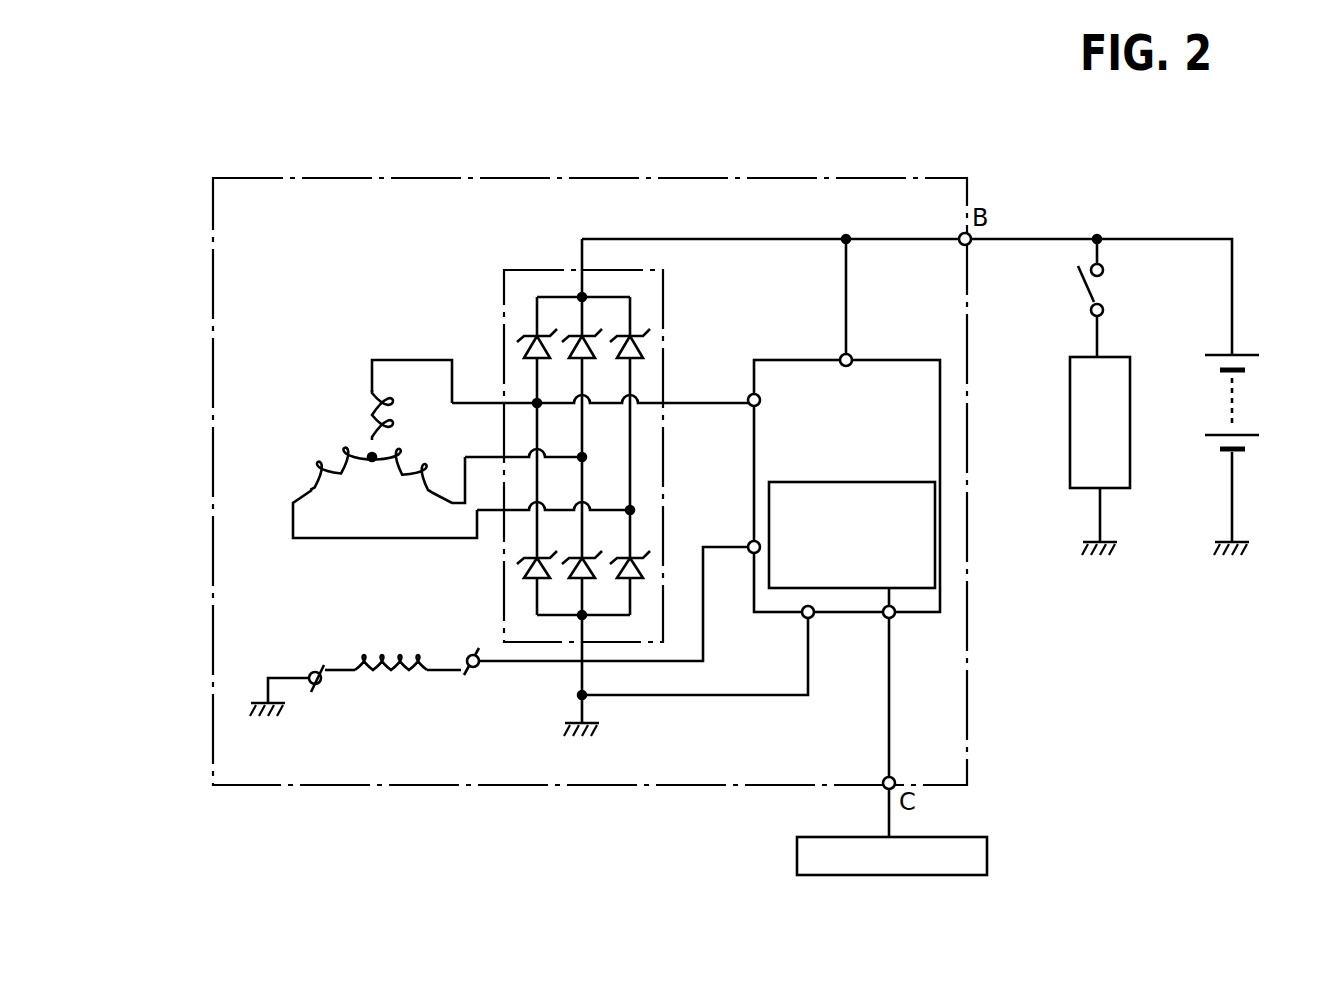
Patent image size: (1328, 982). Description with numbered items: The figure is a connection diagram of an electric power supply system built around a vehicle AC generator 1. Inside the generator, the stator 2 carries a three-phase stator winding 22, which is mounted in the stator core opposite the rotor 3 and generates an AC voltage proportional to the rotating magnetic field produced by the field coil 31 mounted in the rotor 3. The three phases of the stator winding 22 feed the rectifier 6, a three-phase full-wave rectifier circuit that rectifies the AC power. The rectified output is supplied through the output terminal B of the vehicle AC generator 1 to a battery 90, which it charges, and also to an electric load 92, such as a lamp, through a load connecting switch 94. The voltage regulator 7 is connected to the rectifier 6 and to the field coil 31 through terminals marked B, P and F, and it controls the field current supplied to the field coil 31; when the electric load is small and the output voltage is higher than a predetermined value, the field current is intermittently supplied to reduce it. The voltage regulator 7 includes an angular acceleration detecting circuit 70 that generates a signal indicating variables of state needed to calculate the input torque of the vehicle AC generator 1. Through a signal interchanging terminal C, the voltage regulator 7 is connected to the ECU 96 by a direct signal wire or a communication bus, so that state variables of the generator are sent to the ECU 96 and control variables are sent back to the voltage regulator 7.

The vehicle AC generator 1 is at (531, 178).
The stator 2 is at (500, 409).
The stator winding 22 is at (352, 446).
The rotor 3 is at (499, 631).
The field coil 31 is at (373, 657).
The rectifier 6 is at (543, 270).
The voltage regulator 7 is at (837, 469).
The angular acceleration detecting circuit 70 is at (862, 482).
The battery 90 is at (1243, 353).
The electric load 92 is at (1086, 358).
The load connecting switch 94 is at (1101, 287).
The ECU 96 is at (958, 837).